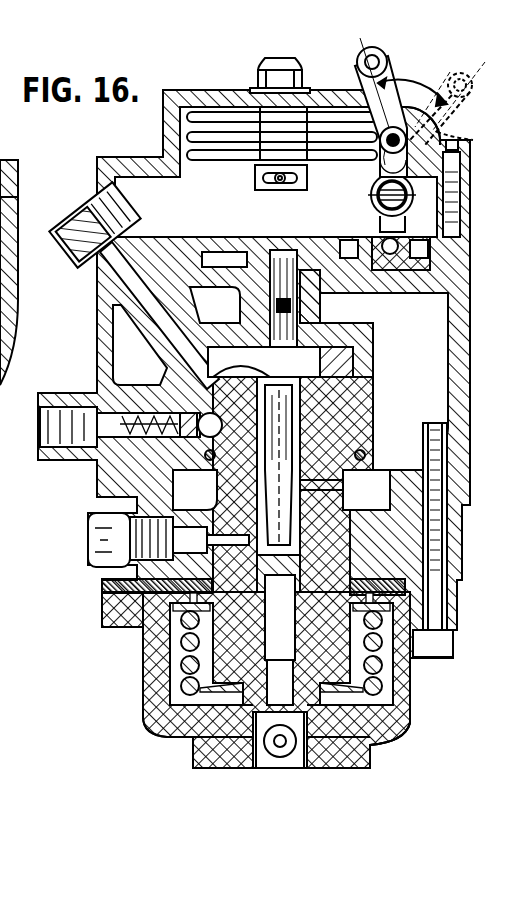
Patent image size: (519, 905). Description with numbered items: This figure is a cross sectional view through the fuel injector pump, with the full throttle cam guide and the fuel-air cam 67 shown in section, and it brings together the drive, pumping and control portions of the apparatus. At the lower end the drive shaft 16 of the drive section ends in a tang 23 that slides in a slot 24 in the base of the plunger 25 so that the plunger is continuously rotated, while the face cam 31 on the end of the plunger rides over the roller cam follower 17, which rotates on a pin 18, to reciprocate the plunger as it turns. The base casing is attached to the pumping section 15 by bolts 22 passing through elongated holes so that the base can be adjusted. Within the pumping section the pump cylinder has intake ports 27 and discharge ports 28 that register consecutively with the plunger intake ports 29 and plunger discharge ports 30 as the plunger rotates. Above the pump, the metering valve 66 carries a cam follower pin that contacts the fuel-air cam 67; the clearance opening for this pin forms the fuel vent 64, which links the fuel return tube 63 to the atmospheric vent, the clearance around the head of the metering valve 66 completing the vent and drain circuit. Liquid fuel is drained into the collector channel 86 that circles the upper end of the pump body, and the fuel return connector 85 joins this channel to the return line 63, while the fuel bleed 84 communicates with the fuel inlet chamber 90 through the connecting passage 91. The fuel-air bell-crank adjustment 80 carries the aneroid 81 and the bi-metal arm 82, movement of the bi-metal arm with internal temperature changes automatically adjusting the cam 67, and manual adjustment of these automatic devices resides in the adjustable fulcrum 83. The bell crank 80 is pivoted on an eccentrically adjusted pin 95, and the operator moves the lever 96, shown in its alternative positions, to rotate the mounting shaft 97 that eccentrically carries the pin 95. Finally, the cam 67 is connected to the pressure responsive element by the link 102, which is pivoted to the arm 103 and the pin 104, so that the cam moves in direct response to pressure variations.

The pumping section 15 is at (410, 558).
The drive shaft 16 is at (295, 766).
The cam follower 17 is at (384, 742).
The pin 18 is at (372, 762).
The bolts 22 is at (438, 532).
The tang 23 is at (210, 690).
The slot 24 is at (355, 690).
The plunger 25 is at (130, 560).
The intake ports 27 is at (330, 478).
The discharge ports 28 is at (135, 520).
The plunger intake ports 29 is at (340, 497).
The plunger discharge ports 30 is at (195, 490).
The face cam 31 is at (215, 722).
The fuel return tube 63 is at (52, 440).
The fuel vent 64 is at (325, 310).
The metering valve 66 is at (348, 400).
The fuel-air cam 67 is at (318, 250).
The fuel air bell-crank adjustment 80 is at (373, 188).
The aneroid 81 is at (218, 115).
The bi-metal arm 82 is at (312, 180).
The adjustable fulcrum 83 is at (408, 265).
The fuel bleed 84 is at (132, 287).
The fuel return connector 85 is at (175, 395).
The collector channel 86 is at (355, 385).
The fuel inlet chamber 90 is at (384, 401).
The connecting passage 91 is at (82, 248).
The pin 95 is at (393, 80).
The lever 96 is at (408, 68).
The mounting shaft 97 is at (446, 120).
The link 102 is at (256, 220).
The arm 103 is at (248, 240).
The pin 104 is at (340, 275).